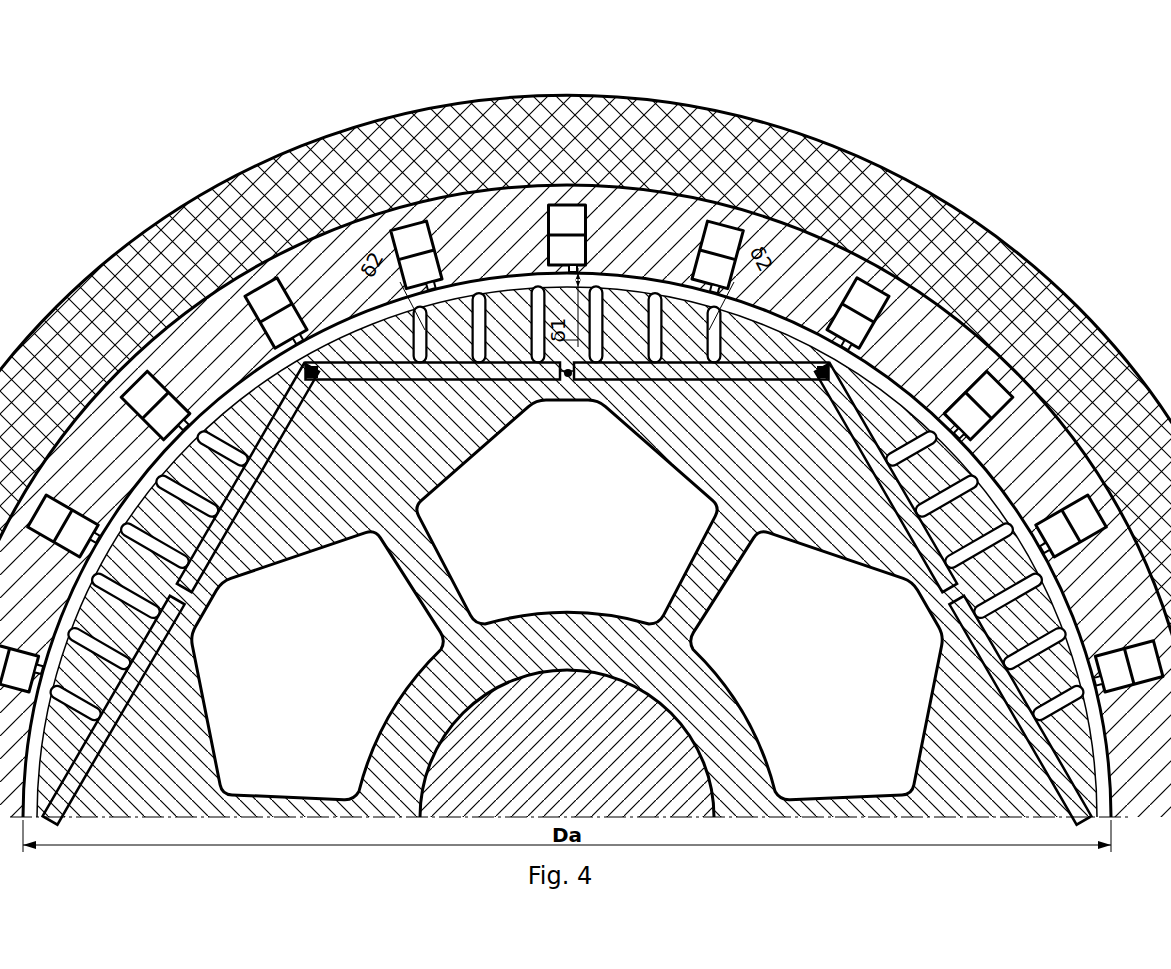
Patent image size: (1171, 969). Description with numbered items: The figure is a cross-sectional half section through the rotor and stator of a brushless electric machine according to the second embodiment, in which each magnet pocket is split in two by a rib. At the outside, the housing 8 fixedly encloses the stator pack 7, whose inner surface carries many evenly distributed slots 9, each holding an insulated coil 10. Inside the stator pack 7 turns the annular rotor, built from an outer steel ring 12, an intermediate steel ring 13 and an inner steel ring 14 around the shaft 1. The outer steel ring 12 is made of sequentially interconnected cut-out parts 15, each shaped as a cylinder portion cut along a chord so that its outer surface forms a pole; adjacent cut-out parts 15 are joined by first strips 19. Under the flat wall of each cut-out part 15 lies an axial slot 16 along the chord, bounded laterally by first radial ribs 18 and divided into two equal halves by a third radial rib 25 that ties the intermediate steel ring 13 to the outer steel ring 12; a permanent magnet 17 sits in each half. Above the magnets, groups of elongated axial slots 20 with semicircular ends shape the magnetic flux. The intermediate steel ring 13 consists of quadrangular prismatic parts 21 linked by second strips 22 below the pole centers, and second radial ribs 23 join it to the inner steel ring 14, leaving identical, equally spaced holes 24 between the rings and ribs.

The shaft 1 is at (490, 787).
The stator pack 7 is at (268, 305).
The housing 8 is at (450, 135).
The slot 9 is at (110, 277).
The insulated coil 10 is at (118, 362).
The outer steel ring 12 is at (455, 295).
The intermediate steel ring 13 is at (713, 463).
The inner steel ring 14 is at (478, 655).
The cut-out part 15 is at (445, 462).
The axial slot 16 is at (927, 297).
The permanent magnet 17 is at (780, 373).
The first radial rib 18 is at (823, 377).
The first strip 19 is at (310, 368).
The elongated axial slot 20 is at (593, 400).
The quadrangular prismatic part 21 is at (655, 350).
The second strip 22 is at (928, 590).
The second radial rib 23 is at (687, 609).
The hole 24 is at (580, 450).
The third radial rib 25 is at (568, 377).